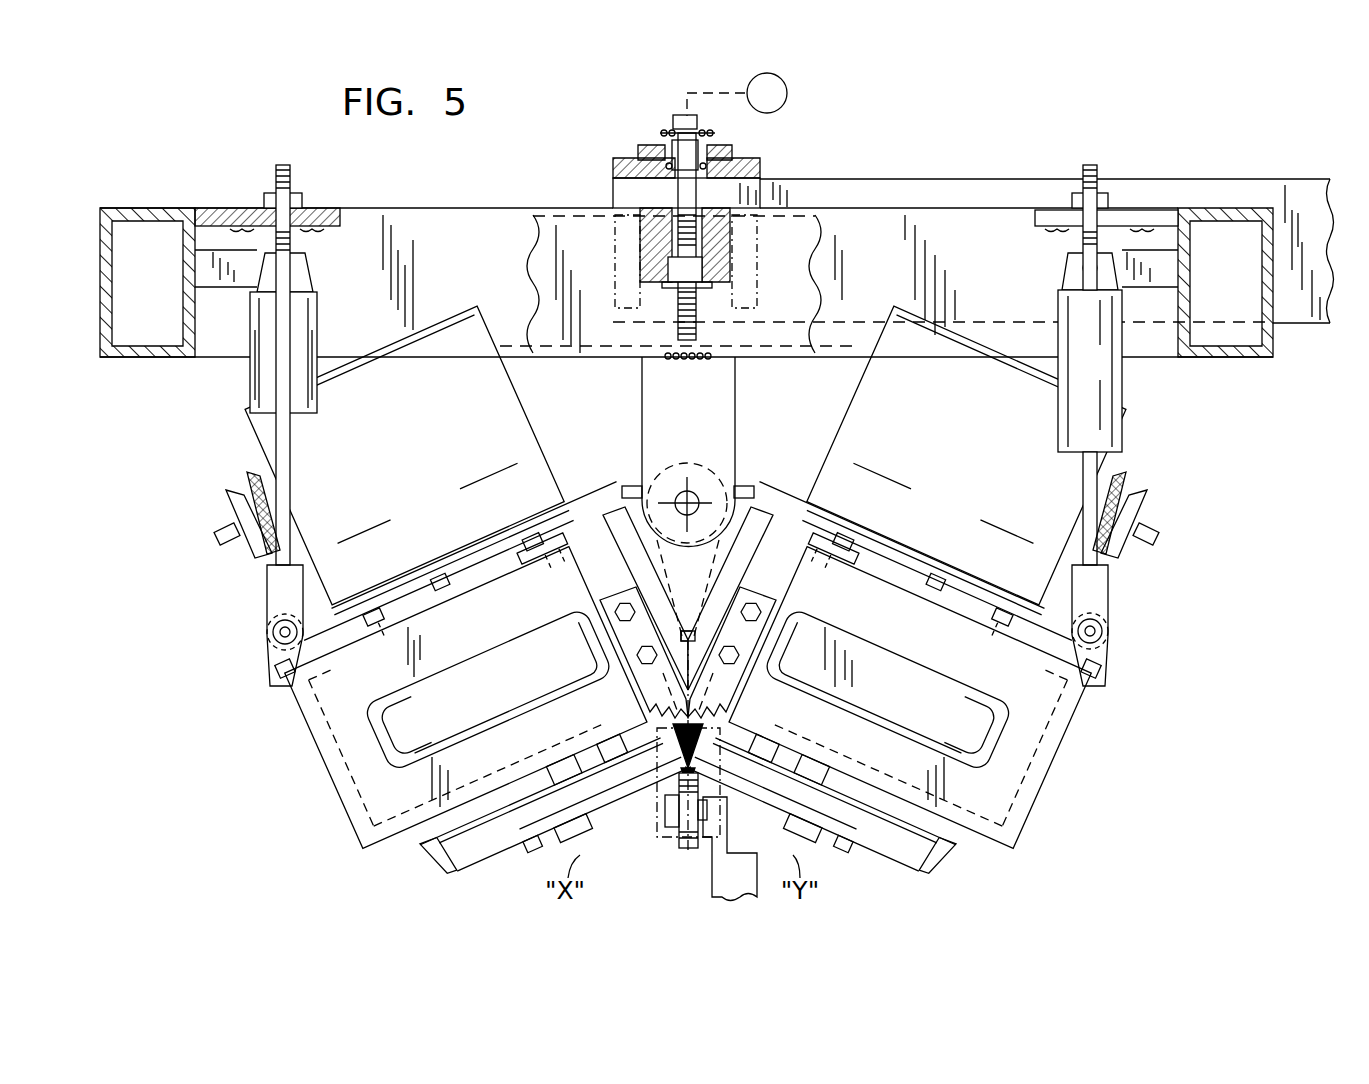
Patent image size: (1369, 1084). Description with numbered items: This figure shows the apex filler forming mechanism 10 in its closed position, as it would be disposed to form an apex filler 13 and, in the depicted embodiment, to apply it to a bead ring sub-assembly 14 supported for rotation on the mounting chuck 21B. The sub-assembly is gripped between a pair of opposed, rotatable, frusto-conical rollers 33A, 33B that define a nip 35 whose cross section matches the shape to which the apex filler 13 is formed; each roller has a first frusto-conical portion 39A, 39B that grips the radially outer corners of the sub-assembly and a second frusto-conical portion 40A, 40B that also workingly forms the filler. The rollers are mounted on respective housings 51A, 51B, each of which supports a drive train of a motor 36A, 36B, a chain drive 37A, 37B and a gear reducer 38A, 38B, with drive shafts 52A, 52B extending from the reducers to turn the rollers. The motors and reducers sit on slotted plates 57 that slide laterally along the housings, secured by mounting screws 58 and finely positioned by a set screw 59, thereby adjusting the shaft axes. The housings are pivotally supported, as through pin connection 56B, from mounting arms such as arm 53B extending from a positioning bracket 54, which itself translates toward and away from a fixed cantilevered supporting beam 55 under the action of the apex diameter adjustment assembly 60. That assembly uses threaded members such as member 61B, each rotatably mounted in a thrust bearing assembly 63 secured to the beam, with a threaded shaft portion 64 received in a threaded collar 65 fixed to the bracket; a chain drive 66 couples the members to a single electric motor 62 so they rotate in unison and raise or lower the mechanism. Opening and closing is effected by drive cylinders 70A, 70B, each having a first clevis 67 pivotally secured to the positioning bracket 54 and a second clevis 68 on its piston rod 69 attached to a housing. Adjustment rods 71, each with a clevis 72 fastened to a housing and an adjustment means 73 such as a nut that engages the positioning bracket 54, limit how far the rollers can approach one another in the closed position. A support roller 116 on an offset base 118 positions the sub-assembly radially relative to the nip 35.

The apex filler forming mechanism 10 is at (258, 712).
The apex filler 13 is at (678, 762).
The bead ring sub-assembly 14 is at (715, 761).
The mounting chuck 21B is at (700, 893).
The roller 33A is at (483, 864).
The roller 33B is at (903, 864).
The nip 35 is at (705, 748).
The motor 36A is at (507, 420).
The motor 36B is at (862, 407).
The chain drive 37A is at (266, 600).
The chain drive 37B is at (1115, 600).
The gear reducer 38A is at (504, 658).
The gear reducer 38B is at (930, 690).
The first frusto-conical portion 39A is at (455, 866).
The first frusto-conical portion 39B is at (920, 870).
The second frusto-conical portion 40A is at (440, 852).
The second frusto-conical portion 40B is at (940, 855).
The housing 51A is at (315, 762).
The housing 51B is at (1070, 745).
The drive shaft 52A is at (552, 770).
The drive shaft 52B is at (828, 770).
The mounting arm 53B is at (720, 448).
The positioning bracket 54 is at (467, 218).
The supporting beam 55 is at (960, 187).
The pin connection 56B is at (680, 498).
The slotted plate 57 is at (467, 587).
The mounting screw 58 is at (367, 607).
The set screw 59 is at (272, 670).
The apex diameter adjustment assembly 60 is at (776, 136).
The threaded member 61B is at (676, 193).
The electric motor 62 is at (788, 93).
The thrust bearing assembly 63 is at (744, 152).
The threaded shaft portion 64 is at (690, 360).
The threaded collar 65 is at (705, 268).
The chain drive 66 is at (668, 128).
The first clevis 67 is at (310, 270).
The second clevis 68 is at (1108, 632).
The piston rod 69 is at (1100, 460).
The drive cylinder 70A is at (258, 372).
The drive cylinder 70B is at (1120, 375).
The adjustment rod 71 is at (276, 435).
The clevis 72 is at (268, 632).
The adjustment means 73 is at (300, 200).
The roller 116 is at (682, 840).
The offset base 118 is at (718, 893).